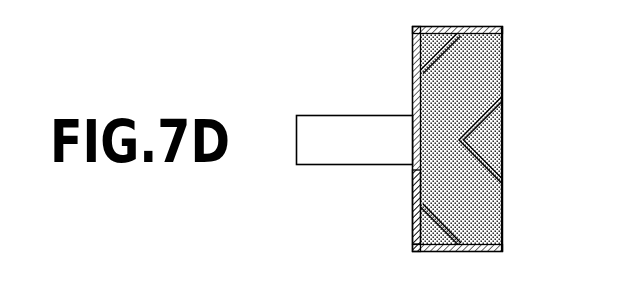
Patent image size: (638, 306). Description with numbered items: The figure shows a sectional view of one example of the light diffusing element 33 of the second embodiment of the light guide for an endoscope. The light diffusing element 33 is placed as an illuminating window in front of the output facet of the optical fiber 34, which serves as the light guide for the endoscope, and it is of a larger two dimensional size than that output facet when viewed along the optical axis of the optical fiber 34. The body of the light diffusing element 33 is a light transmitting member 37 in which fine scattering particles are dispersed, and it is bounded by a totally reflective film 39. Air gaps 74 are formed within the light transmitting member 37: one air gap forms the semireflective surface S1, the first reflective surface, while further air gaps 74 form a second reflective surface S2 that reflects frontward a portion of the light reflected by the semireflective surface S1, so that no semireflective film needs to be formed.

The light diffusing element 33 is at (442, 262).
The optical fiber 34 is at (313, 158).
The light transmitting member 37 is at (428, 186).
The totally reflective film 39 is at (416, 214).
The air gap 74 is at (421, 75).
The semireflective surface S1 is at (496, 102).
The second reflective surface S2 is at (458, 44).